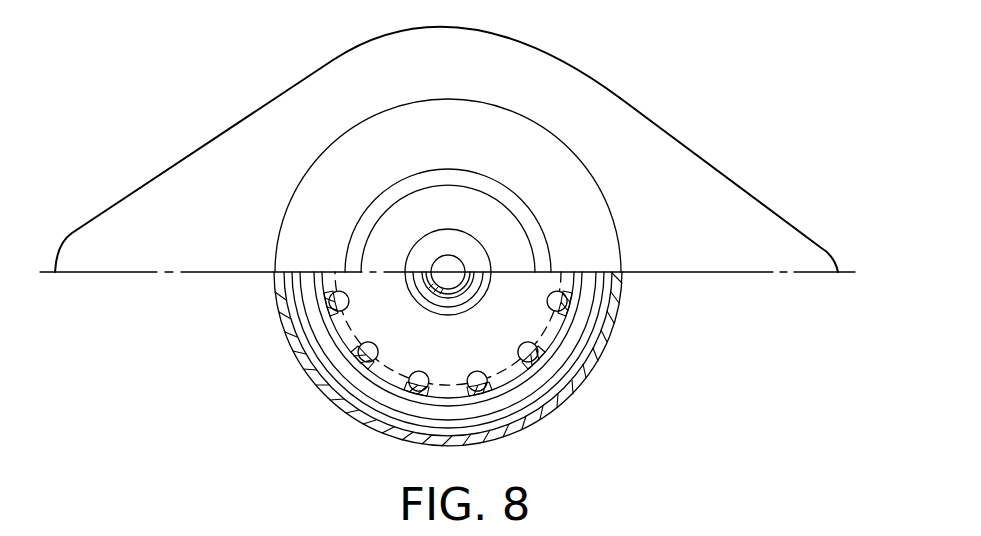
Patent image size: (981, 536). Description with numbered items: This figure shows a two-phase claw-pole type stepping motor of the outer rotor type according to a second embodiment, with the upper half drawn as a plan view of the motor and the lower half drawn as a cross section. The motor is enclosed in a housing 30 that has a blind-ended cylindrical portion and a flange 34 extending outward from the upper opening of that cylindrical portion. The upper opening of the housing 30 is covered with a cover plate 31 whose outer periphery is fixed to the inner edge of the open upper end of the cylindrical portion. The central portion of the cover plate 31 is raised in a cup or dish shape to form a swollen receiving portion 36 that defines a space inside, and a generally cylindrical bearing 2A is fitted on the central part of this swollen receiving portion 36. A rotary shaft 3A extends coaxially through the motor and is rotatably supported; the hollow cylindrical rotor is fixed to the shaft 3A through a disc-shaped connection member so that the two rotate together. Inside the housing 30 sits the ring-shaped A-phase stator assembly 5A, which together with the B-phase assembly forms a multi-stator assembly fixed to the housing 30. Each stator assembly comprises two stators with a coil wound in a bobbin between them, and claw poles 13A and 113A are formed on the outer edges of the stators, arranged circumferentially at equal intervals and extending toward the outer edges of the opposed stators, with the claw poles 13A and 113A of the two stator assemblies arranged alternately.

The housing 30 is at (667, 112).
The cover plate 31 is at (393, 145).
The flange 34 is at (672, 168).
The swollen receiving portion 36 is at (478, 217).
The bearing 2A is at (421, 262).
The rotary shaft 3A is at (442, 258).
The A-phase stator assembly 5A is at (528, 318).
The claw poles 13A is at (513, 382).
The claw poles 113A is at (502, 377).